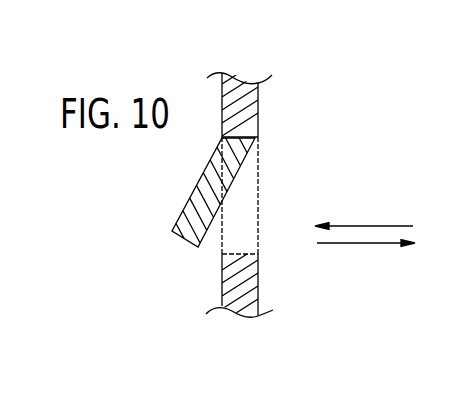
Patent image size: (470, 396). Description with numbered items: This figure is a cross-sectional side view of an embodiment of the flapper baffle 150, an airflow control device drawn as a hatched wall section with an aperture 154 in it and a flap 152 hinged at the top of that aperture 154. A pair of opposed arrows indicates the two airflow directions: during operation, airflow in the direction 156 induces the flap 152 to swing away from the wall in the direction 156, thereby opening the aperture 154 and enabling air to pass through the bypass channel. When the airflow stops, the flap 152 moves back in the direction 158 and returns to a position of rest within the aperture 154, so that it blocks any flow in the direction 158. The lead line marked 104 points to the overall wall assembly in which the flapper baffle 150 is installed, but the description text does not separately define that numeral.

The wall panel 104 is at (341, 130).
The flapper baffle 150 is at (222, 290).
The flap 152 is at (192, 214).
The aperture 154 is at (246, 213).
The direction 156 is at (370, 226).
The direction 158 is at (360, 245).